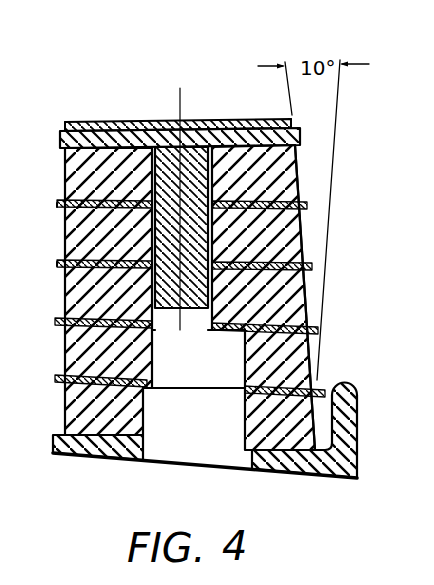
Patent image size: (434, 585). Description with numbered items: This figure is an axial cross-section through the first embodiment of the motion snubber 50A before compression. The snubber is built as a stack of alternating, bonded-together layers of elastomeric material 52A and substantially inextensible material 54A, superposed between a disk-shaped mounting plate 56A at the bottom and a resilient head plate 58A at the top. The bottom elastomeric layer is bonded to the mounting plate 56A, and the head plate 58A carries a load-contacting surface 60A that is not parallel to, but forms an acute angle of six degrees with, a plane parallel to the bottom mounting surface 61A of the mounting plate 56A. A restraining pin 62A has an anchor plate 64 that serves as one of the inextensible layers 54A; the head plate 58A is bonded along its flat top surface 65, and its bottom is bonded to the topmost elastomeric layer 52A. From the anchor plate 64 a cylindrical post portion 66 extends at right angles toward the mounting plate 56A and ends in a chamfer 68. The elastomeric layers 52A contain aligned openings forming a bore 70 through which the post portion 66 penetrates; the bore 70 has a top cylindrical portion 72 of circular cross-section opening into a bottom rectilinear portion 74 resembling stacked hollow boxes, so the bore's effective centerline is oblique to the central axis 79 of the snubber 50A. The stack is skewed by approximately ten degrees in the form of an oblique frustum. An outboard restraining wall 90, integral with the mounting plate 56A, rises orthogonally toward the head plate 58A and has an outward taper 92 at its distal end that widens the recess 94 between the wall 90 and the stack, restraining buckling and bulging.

The motion snubber 50A is at (189, 61).
The elastomeric material layers 52A is at (305, 288).
The substantially inextensible material layers 54A is at (57, 203).
The mounting plate 56A is at (118, 458).
The head plate 58A is at (65, 124).
The load-contacting surface 60A is at (266, 118).
The bottom mounting surface 61A is at (285, 478).
The restraining pin 62A is at (275, 232).
The anchor plate 64 is at (300, 137).
The flat top surface 65 is at (101, 121).
The post portion 66 is at (297, 168).
The chamfer 68 is at (303, 313).
The bore 70 is at (192, 448).
The top cylindrical portion 72 is at (182, 328).
The bottom rectilinear portion 74 is at (193, 418).
The central axis 79 is at (181, 100).
The outboard restraining wall 90 is at (359, 426).
The outward taper 92 is at (341, 381).
The recess 94 is at (322, 406).